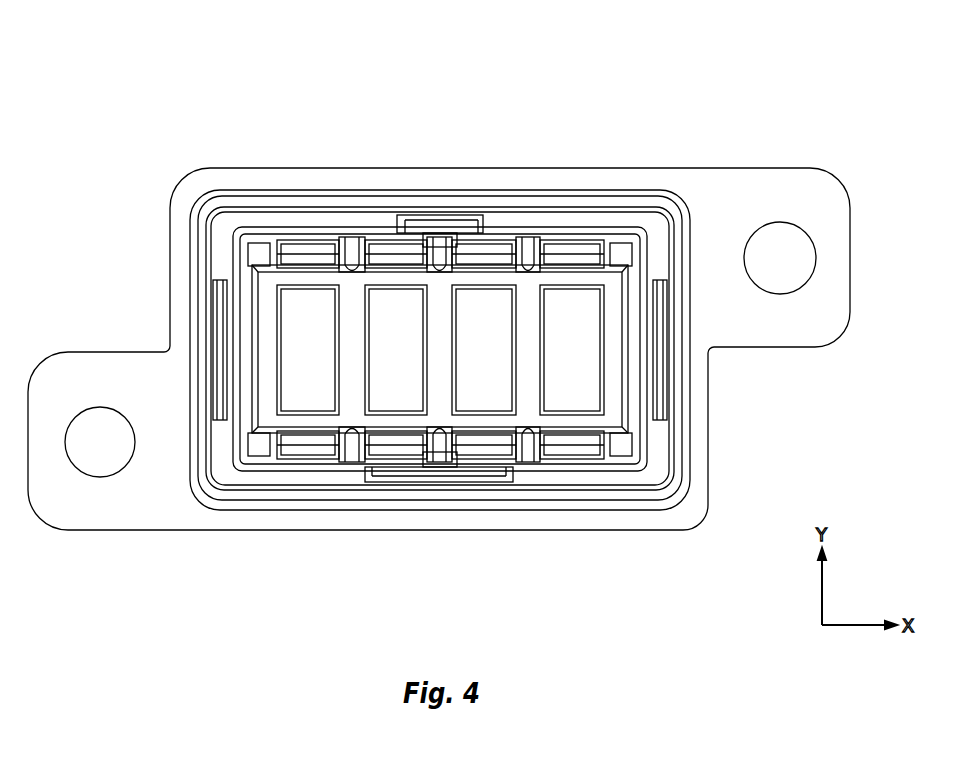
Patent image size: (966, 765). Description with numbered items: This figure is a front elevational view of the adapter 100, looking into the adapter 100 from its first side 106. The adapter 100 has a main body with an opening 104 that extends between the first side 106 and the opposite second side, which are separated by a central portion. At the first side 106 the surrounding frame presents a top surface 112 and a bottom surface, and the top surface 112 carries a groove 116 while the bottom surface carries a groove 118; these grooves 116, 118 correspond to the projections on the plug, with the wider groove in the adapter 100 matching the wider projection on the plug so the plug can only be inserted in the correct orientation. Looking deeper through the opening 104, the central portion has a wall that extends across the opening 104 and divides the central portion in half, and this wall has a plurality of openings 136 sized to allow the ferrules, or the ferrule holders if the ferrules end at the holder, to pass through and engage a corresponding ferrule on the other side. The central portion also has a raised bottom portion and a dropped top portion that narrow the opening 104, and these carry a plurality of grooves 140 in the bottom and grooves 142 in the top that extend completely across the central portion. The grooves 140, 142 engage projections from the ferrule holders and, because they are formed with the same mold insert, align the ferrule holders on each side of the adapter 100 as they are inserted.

The adapter 100 is at (896, 112).
The opening 104 is at (315, 386).
The first side 106 is at (352, 466).
The top surface 112 is at (495, 242).
The groove 116 is at (431, 229).
The groove 118 is at (432, 470).
The openings 136 is at (575, 393).
The grooves 140 is at (405, 440).
The grooves 142 is at (575, 242).